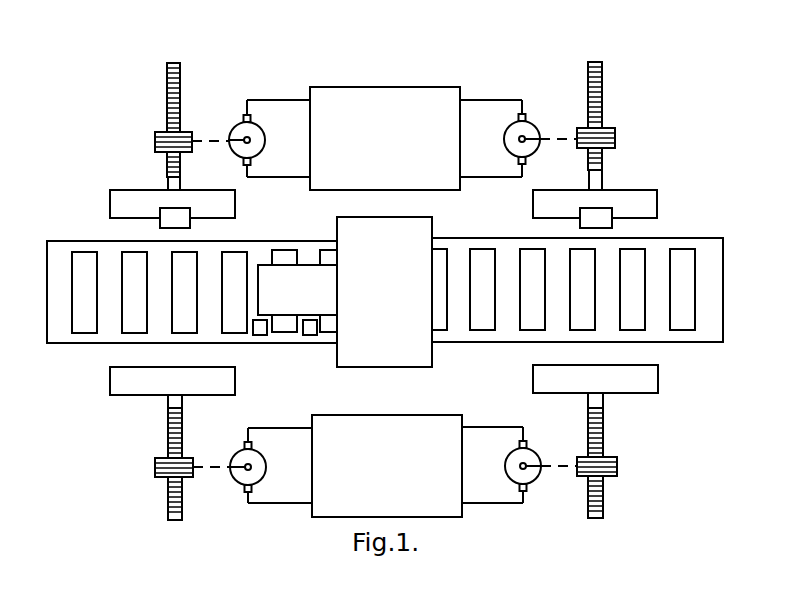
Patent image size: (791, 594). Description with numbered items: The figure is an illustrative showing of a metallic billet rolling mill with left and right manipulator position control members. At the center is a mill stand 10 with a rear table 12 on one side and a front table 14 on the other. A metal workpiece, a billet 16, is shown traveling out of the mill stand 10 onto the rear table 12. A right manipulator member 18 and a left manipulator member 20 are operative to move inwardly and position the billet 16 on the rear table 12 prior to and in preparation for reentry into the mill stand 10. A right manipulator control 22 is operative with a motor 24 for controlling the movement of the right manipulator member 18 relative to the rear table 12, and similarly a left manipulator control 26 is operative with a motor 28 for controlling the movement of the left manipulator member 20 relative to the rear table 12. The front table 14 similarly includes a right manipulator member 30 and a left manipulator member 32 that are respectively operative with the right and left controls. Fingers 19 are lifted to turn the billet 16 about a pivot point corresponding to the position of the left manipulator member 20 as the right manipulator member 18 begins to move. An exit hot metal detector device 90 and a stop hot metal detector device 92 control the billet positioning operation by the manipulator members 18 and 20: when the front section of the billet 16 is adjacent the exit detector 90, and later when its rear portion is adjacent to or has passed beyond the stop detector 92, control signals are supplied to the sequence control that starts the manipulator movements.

The mill stand 10 is at (412, 217).
The rear table 12 is at (82, 241).
The front table 14 is at (670, 238).
The billet 16 is at (307, 266).
The right manipulator member 18 is at (148, 190).
The fingers 19 is at (185, 224).
The left manipulator member 20 is at (138, 367).
The right manipulator control 22 is at (402, 87).
The motor 24 is at (232, 130).
The left manipulator control 26 is at (400, 415).
The motor 28 is at (238, 455).
The right manipulator member 30 is at (615, 190).
The left manipulator member 32 is at (642, 365).
The exit hot metal detector device 90 is at (310, 336).
The stop hot metal detector device 92 is at (260, 337).